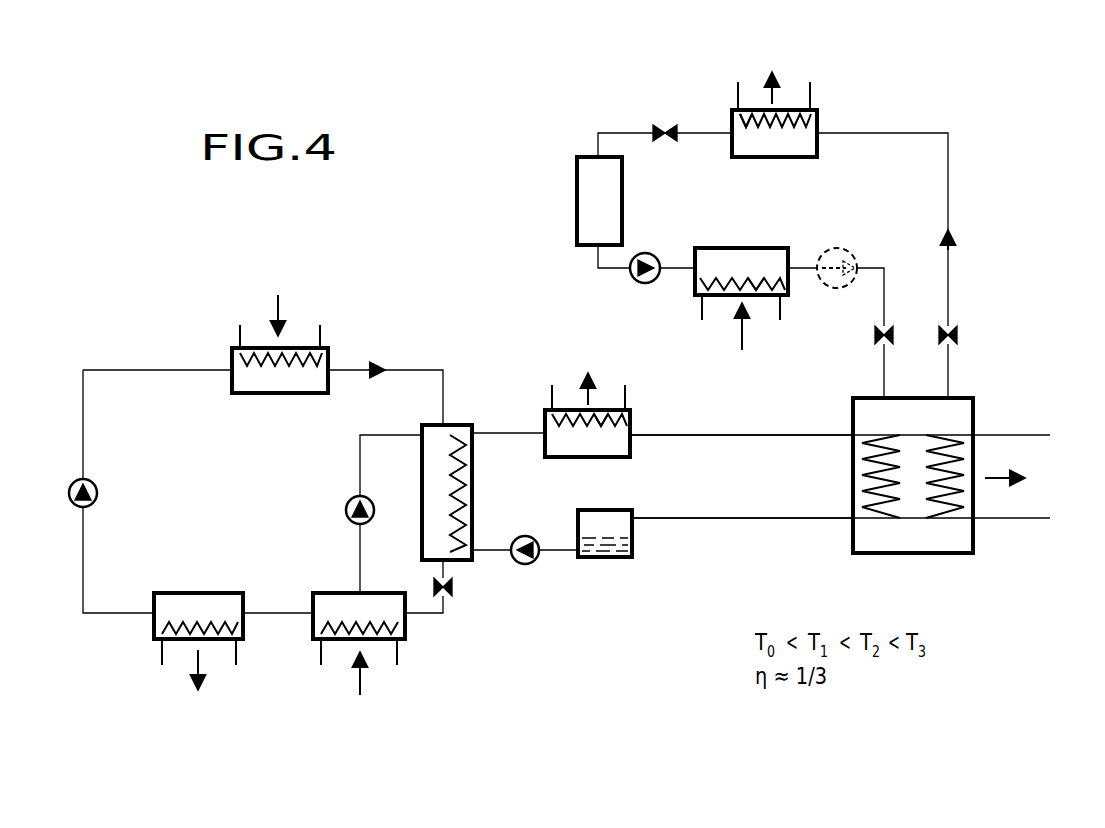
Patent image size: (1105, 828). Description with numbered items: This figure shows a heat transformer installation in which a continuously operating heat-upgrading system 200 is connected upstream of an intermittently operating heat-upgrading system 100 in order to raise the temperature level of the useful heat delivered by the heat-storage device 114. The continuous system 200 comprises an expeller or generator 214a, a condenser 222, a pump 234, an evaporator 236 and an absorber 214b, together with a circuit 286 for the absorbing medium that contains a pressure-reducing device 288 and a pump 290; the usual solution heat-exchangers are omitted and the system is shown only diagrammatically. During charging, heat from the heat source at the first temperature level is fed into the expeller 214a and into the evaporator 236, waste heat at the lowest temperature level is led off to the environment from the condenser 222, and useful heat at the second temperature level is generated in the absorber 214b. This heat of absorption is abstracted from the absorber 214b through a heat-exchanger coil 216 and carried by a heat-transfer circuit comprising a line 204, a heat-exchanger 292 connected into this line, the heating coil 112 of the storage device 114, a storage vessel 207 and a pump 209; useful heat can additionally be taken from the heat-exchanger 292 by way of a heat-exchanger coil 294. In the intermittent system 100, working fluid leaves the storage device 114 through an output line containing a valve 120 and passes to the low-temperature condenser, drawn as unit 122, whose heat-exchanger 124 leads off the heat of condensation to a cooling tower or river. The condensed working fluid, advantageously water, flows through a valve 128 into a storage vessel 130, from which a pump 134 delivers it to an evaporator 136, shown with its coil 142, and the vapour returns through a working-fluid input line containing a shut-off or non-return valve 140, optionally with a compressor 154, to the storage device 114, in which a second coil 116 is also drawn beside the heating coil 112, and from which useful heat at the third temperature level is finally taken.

The heat-upgrading system operating intermittently 100 is at (823, 202).
The heating coil 112 is at (880, 520).
The heat-storage device 114 is at (928, 555).
The heat exchanger coil in tank 116 is at (950, 520).
The valve 120 is at (955, 335).
The condenser heat exchanger 122 is at (817, 140).
The heat-exchanger 124 is at (748, 124).
The valve 128 is at (665, 124).
The storage vessel 130 is at (580, 172).
The pump 134 is at (640, 283).
The evaporator 136 is at (730, 262).
The shut-off valve or non-return valve 140 is at (874, 335).
The heat exchange coil 142 is at (772, 272).
The compressor 154 is at (847, 252).
The heat-upgrading system operating continuously 200 is at (273, 470).
The line 204 is at (775, 437).
The storage vessel 207 is at (634, 548).
The pump 209 is at (534, 562).
The expeller or generator 214a is at (322, 598).
The absorber 214b is at (468, 497).
The heat-exchanger coil 216 is at (470, 450).
The condenser 222 is at (172, 596).
The pump 234 is at (97, 490).
The evaporator 236 is at (332, 350).
The circuit for the absorbing medium 286 is at (411, 492).
The pressure-reducing device 288 is at (455, 590).
The pump 290 is at (347, 515).
The heat-exchanger 292 is at (562, 450).
The heat-exchanger coil 294 is at (608, 428).